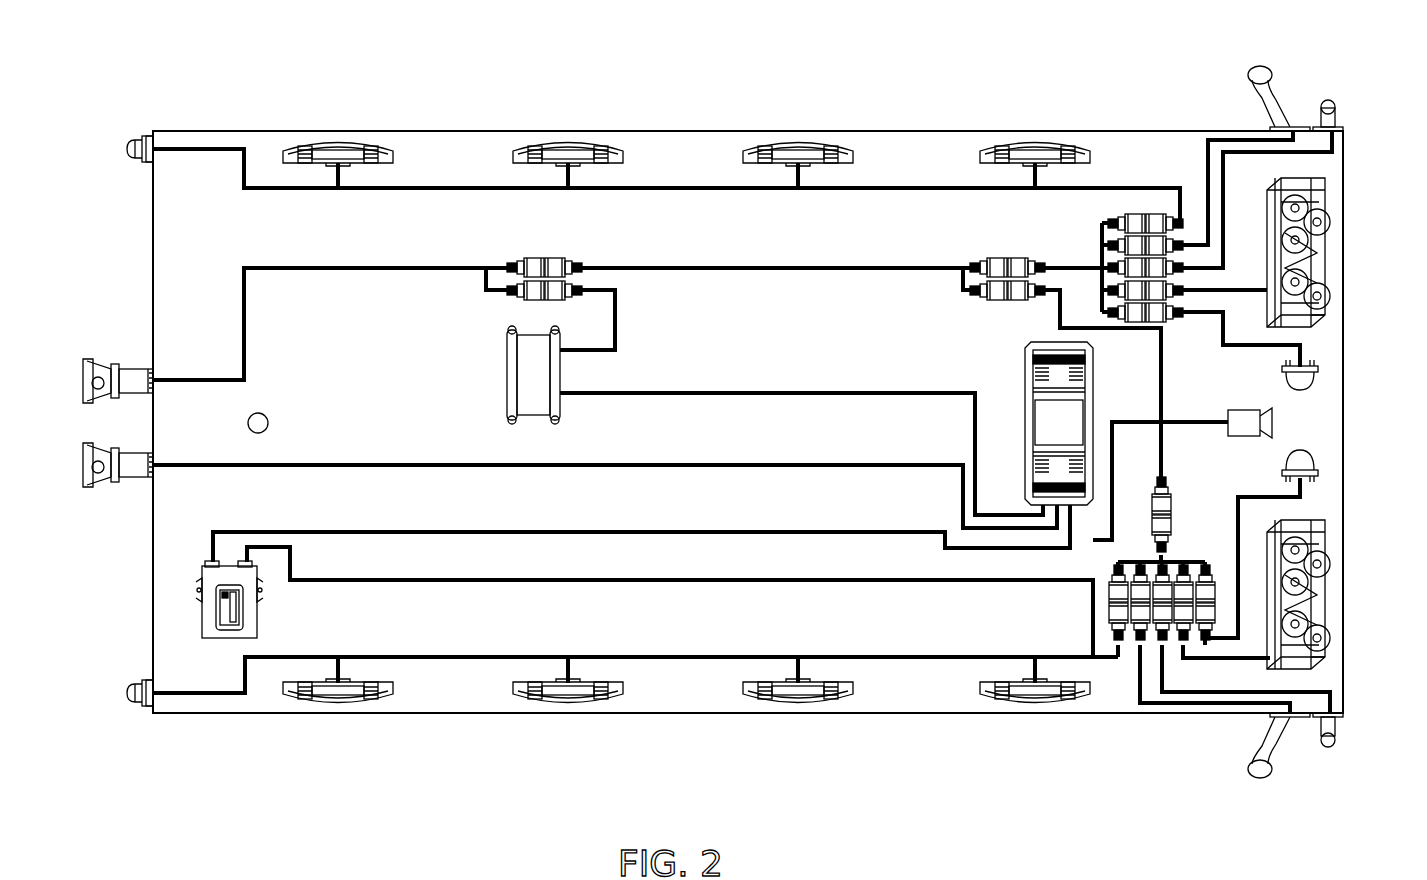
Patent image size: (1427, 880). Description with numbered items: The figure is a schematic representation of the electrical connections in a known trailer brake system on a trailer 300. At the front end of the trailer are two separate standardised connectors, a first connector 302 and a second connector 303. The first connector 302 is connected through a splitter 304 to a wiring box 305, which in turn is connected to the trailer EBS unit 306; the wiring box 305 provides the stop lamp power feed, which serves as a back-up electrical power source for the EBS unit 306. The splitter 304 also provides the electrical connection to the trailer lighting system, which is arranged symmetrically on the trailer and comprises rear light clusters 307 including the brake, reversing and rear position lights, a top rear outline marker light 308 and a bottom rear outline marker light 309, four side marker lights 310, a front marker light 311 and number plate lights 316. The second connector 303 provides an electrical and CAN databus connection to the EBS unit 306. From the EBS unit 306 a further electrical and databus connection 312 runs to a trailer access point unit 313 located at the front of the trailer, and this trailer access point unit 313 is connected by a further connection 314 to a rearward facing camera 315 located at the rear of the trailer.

The trailer 300 is at (495, 742).
The ISO 12098 connector 302 is at (107, 365).
The ISO 7638 connector 303 is at (107, 482).
The splitter 304 is at (522, 260).
The wiring box 305 is at (507, 372).
The trailer EBS unit 306 is at (1023, 378).
The rear light clusters 307 is at (1327, 296).
The top rear outline marker light 308 is at (1334, 100).
The bottom rear outline marker light 309 is at (1262, 66).
The side marker lights 310 is at (340, 138).
The front marker light 311 is at (128, 148).
The electrical and databus connection 312 is at (633, 530).
The trailer access point unit 313 is at (260, 603).
The further connection 314 is at (635, 583).
The rearward facing camera 315 is at (1245, 424).
The number plate lights 316 is at (1315, 382).